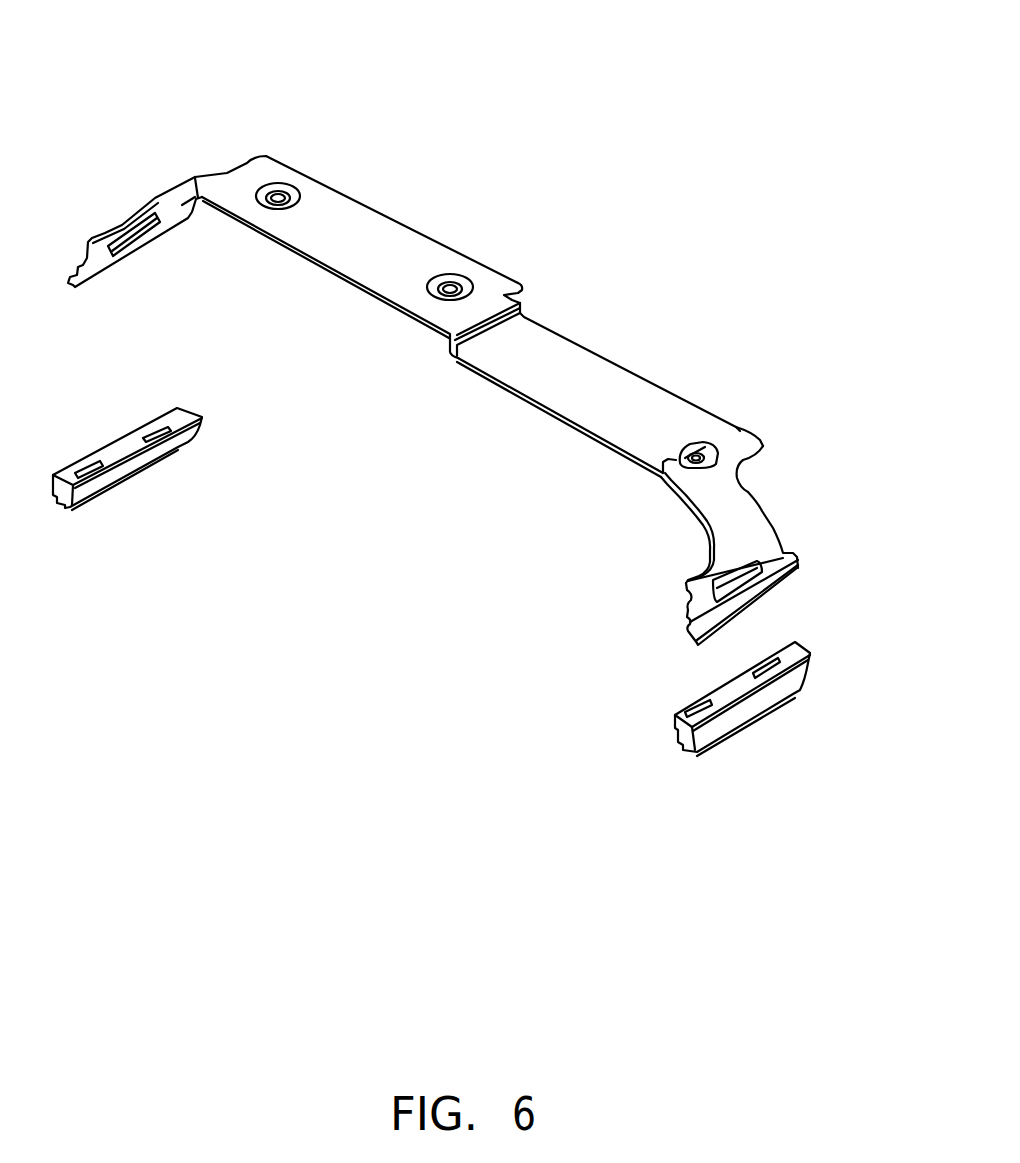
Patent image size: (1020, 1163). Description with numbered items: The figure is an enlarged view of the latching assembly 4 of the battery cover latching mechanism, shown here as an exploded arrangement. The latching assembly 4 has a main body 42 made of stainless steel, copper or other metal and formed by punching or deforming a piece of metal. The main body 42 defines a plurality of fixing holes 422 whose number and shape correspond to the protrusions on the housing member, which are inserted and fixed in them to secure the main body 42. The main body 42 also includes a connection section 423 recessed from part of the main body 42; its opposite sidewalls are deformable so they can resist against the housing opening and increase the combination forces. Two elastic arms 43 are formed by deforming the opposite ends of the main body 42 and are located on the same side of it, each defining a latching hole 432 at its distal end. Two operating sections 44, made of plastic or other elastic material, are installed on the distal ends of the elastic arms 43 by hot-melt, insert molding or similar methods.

The latching assembly 4 is at (240, 70).
The main body 42 is at (400, 240).
The fixing holes 422 is at (277, 193).
The connection section 423 is at (617, 377).
The elastic arms 43 is at (737, 500).
The latching hole 432 is at (740, 577).
The operating sections 44 is at (123, 445).